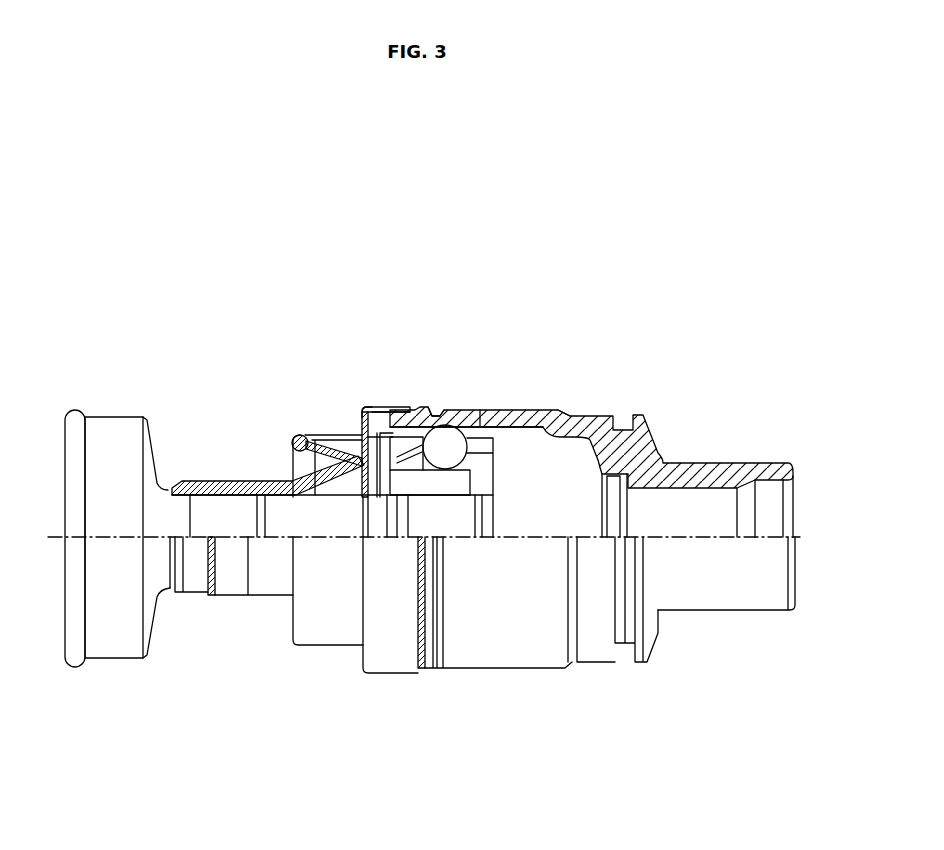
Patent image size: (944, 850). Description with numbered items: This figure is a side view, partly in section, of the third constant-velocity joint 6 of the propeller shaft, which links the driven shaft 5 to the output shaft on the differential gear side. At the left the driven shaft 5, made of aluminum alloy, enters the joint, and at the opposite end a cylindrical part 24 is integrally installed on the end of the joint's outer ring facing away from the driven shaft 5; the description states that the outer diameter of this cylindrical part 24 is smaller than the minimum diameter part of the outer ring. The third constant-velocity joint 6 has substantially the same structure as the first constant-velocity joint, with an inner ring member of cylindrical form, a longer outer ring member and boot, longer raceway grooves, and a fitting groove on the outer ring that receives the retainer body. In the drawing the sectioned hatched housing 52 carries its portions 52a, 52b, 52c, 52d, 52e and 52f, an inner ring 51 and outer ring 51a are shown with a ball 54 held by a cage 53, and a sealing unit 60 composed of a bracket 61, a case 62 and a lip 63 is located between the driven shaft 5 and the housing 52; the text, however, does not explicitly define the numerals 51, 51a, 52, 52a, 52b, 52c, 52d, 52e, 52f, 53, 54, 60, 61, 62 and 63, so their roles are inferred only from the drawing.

The third constant-velocity joint 6 is at (446, 284).
The driven shaft 5 is at (112, 417).
The cylindrical part 24 is at (727, 612).
The inner ring 51 is at (457, 478).
The outer ring 51a is at (483, 448).
The housing 52 is at (548, 410).
The housing top portion 52a is at (385, 420).
The housing wall portion 52b is at (500, 425).
The housing shoulder 52c is at (597, 420).
The housing corner 52d is at (362, 407).
The housing protrusion 52e is at (628, 430).
The housing recess 52f is at (433, 415).
The cage 53 is at (412, 430).
The ball 54 is at (455, 440).
The seal unit 60 is at (330, 342).
The seal bracket 61 is at (312, 432).
The seal case 62 is at (270, 482).
The seal lip 63 is at (233, 480).